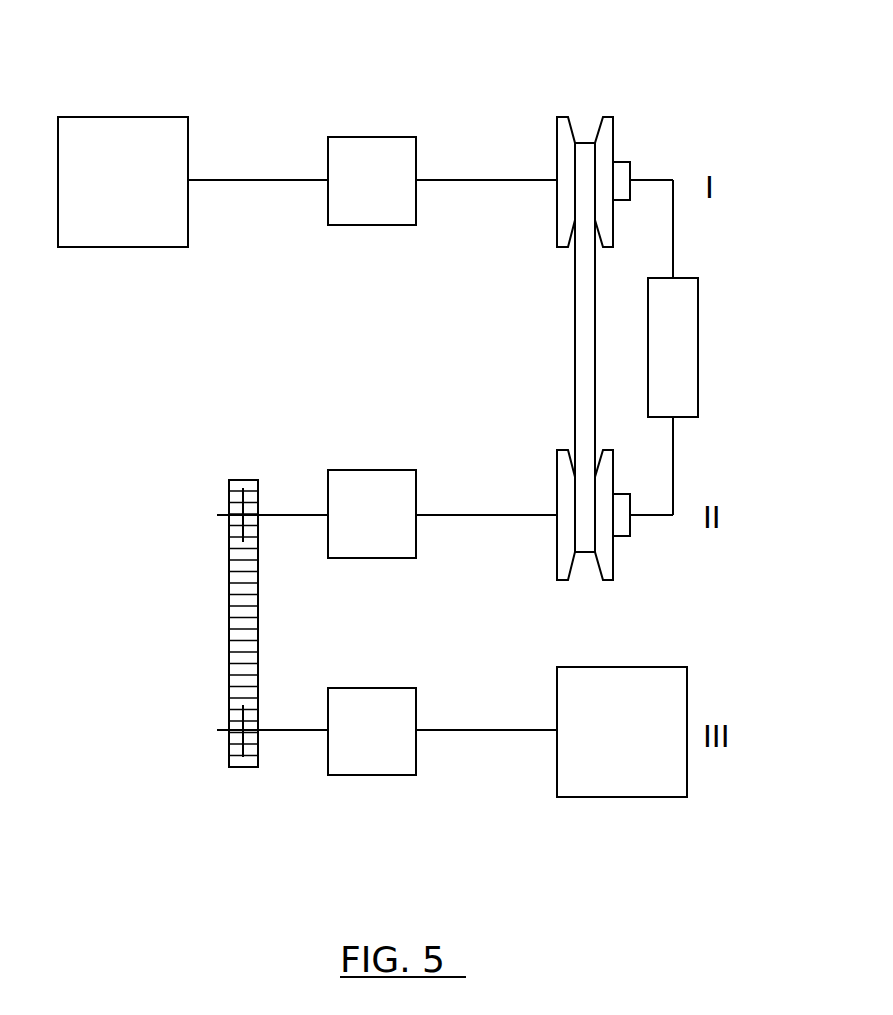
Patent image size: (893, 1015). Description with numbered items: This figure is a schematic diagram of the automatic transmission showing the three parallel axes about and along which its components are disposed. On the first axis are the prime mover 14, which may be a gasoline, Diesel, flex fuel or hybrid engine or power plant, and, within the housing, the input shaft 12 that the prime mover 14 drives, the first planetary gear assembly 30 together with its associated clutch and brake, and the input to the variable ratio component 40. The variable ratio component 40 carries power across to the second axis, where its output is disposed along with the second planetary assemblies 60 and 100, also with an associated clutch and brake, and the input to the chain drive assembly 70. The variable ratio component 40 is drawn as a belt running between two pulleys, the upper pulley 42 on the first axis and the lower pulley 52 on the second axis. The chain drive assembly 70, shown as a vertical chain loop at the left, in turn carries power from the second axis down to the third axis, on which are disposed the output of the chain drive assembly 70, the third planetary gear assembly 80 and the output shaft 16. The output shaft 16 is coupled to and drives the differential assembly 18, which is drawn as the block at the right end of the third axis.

The input shaft 12 is at (245, 179).
The prime mover 14 is at (136, 195).
The output shaft 16 is at (470, 729).
The differential assembly 18 is at (635, 748).
The first planetary gear assembly 30 is at (389, 124).
The variable ratio component 40 is at (629, 298).
The first pulley 42 is at (597, 152).
The second pulley 52 is at (603, 547).
The second planetary assembly 60 is at (393, 466).
The second planetary assembly 100 is at (377, 455).
The chain drive assembly 70 is at (178, 592).
The third planetary gear assembly 80 is at (366, 797).